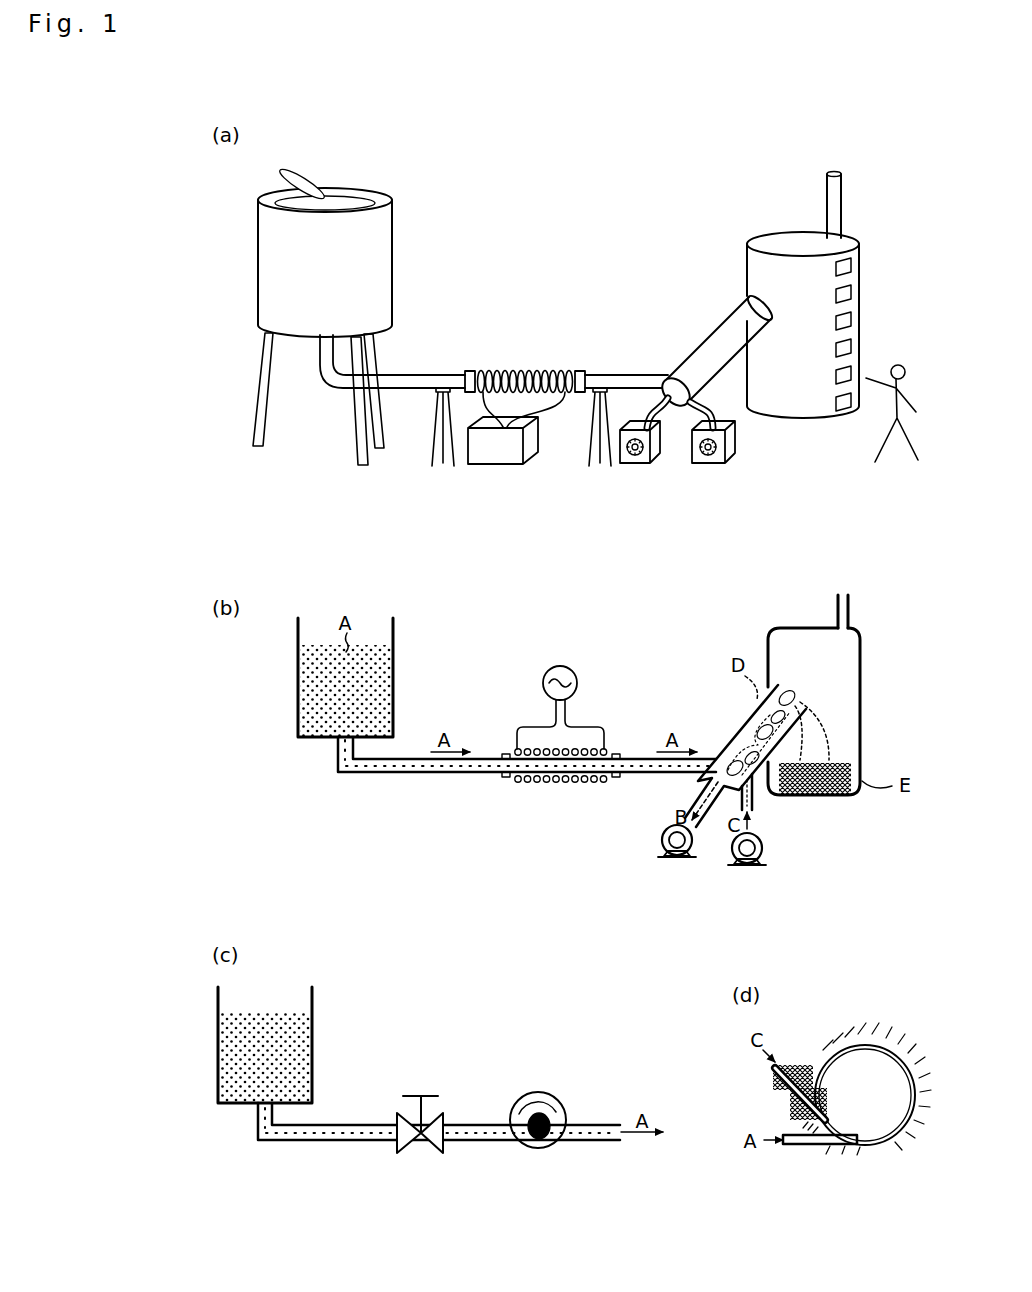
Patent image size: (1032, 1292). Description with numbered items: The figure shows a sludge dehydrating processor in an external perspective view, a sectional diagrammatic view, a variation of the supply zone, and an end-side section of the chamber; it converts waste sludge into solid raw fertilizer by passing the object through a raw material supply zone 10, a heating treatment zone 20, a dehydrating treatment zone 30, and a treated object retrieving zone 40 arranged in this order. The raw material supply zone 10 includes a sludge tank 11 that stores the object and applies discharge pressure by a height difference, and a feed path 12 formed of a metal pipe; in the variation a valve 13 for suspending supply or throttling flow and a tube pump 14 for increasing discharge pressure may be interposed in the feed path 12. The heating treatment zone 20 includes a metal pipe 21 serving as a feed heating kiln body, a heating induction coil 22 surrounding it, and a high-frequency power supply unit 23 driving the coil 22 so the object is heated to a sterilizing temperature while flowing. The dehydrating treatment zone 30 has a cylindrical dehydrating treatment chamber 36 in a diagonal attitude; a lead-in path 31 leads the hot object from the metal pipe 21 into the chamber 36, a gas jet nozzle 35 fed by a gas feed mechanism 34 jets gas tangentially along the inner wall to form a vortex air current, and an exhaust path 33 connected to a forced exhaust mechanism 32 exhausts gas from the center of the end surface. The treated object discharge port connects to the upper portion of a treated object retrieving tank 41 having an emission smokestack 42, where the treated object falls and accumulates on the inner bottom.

The raw material supply zone 10 is at (404, 180).
The sludge tank 11 is at (393, 262).
The feed path 12 is at (412, 375).
The valve 13 is at (443, 1115).
The tube pump 14 is at (555, 1096).
The heating treatment zone 20 is at (532, 305).
The metal pipe 21 is at (493, 372).
The heating induction coil 22 is at (562, 375).
The high-frequency power supply unit 23 is at (505, 465).
The dehydrating treatment zone 30 is at (656, 302).
The lead-in path 31 is at (648, 372).
The forced exhaust mechanism 32 is at (636, 465).
The exhaust path 33 is at (672, 404).
The gas feed mechanism 34 is at (731, 465).
The gas jet nozzle 35 is at (722, 400).
The dehydrating treatment chamber 36 is at (705, 335).
The treated object retrieving zone 40 is at (740, 222).
The treated object retrieving tank 41 is at (861, 297).
The emission smokestack 42 is at (843, 211).